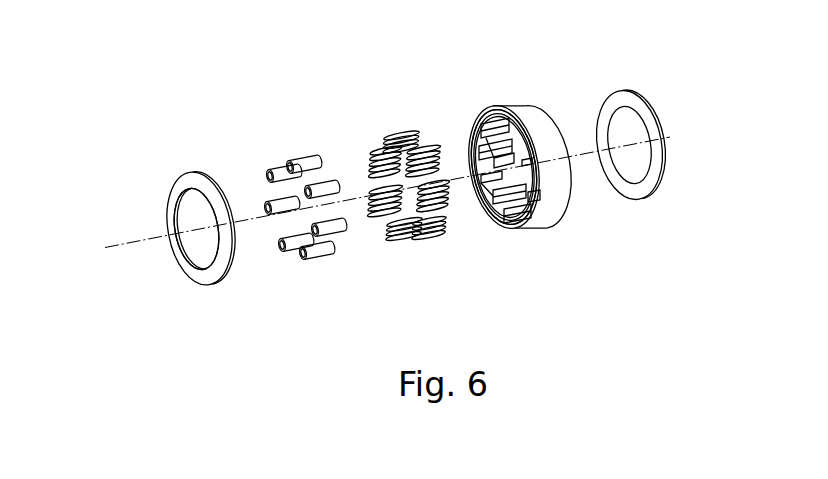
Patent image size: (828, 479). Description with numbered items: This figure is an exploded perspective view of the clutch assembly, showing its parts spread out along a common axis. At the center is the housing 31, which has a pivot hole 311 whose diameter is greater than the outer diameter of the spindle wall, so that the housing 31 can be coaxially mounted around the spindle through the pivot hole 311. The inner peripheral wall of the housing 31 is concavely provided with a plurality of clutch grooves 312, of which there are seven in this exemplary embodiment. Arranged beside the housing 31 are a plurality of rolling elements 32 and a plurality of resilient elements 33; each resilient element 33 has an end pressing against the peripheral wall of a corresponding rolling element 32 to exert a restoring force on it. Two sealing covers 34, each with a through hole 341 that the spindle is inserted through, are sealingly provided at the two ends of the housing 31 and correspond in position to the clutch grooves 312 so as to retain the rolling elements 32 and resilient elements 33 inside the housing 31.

The housing 31 is at (552, 208).
The pivot hole 311 is at (506, 226).
The clutch grooves 312 is at (498, 107).
The rolling elements 32 is at (316, 248).
The resilient elements 33 is at (430, 237).
The sealing covers 34 is at (220, 268).
The through hole 341 is at (193, 212).